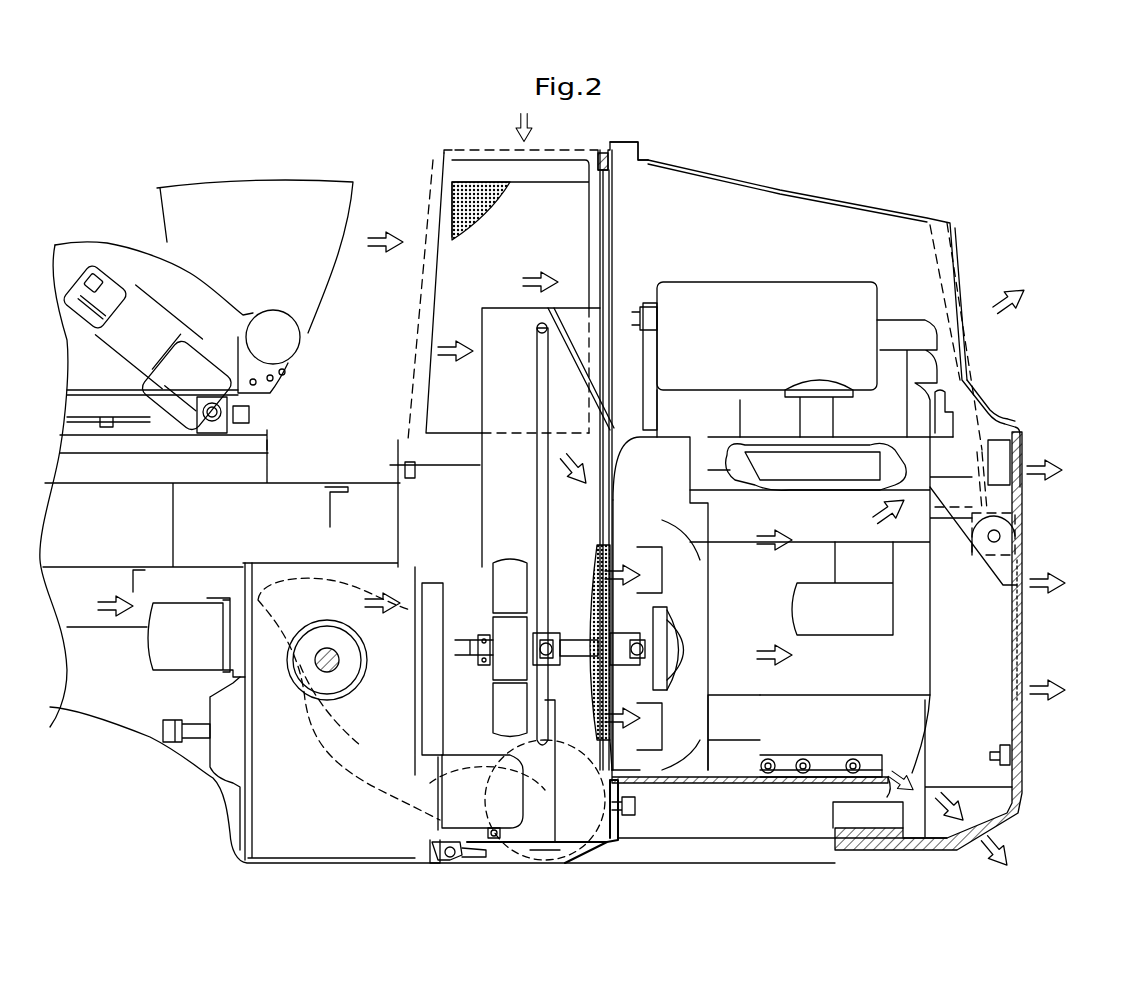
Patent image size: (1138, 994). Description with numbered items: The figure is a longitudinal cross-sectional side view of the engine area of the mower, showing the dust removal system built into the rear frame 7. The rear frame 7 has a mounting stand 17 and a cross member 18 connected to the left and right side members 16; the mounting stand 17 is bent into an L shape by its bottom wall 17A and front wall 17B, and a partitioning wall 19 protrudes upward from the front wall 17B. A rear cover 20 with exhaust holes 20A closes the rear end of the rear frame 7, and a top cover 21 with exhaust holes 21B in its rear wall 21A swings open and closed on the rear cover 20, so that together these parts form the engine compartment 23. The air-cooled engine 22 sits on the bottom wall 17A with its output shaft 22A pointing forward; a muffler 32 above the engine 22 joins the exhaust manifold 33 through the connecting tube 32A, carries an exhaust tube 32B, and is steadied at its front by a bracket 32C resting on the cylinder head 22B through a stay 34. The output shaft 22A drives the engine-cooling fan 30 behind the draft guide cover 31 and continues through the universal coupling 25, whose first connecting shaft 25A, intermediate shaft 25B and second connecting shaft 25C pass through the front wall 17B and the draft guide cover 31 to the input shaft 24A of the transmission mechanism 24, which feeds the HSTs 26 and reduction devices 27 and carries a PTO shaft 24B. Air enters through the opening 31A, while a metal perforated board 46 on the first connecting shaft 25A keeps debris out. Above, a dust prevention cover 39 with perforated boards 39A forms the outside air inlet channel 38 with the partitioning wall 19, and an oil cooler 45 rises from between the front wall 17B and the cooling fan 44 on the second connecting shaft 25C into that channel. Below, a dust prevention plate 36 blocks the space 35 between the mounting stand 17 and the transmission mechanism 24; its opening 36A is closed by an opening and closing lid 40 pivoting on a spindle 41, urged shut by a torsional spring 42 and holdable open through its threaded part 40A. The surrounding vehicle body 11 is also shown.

The rear frame 7 is at (317, 465).
The engine room / machine body 11 is at (93, 240).
The side members 16 is at (750, 838).
The mounting stand 17 is at (683, 783).
The bottom wall 17A is at (740, 783).
The front wall 17B is at (585, 740).
The cross member 18 is at (325, 510).
The partitioning wall 19 is at (600, 253).
The rear cover 20 is at (1025, 725).
The exhaust holes 20A is at (1025, 665).
The top cover 21 is at (755, 190).
The rear wall 21A is at (997, 412).
The exhaust holes 21B is at (975, 290).
The engine 22 is at (930, 625).
The output shaft 22A is at (708, 670).
The cylinder head 22B is at (785, 437).
The engine compartment 23 is at (830, 228).
The transmission mechanism 24 is at (305, 852).
The input shaft 24A is at (505, 690).
The PTO shaft 24B is at (163, 731).
The universal coupling 25 is at (595, 665).
The first connecting shaft 25A is at (672, 620).
The intermediate shaft 25B is at (578, 635).
The second connecting shaft 25C is at (540, 628).
The hydrostatic continuously variable speed change devices (HSTs) 26 is at (322, 690).
The reduction devices 27 is at (338, 765).
The engine-cooling fan 30 is at (665, 555).
The draft guide cover 31 is at (660, 440).
The opening 31A is at (612, 570).
The muffler 32 is at (740, 282).
The connecting tube 32A is at (805, 415).
The exhaust tube 32B is at (908, 320).
The bracket 32C is at (648, 307).
The exhaust manifold 33 is at (805, 470).
The stay 34 is at (640, 340).
The space 35 is at (540, 845).
The dust prevention plate 36 is at (612, 845).
The opening 36A is at (540, 845).
The outside air inlet channel 38 is at (450, 305).
The dust prevention cover 39 is at (419, 166).
The perforated boards 39A is at (458, 215).
The opening and closing lid 40 is at (565, 848).
The threaded part 40A is at (505, 845).
The spindle 41 is at (448, 858).
The torsional spring 42 is at (480, 858).
The cooling fan 44 is at (510, 735).
The oil cooler 45 is at (535, 425).
The metal perforated board 46 is at (642, 810).